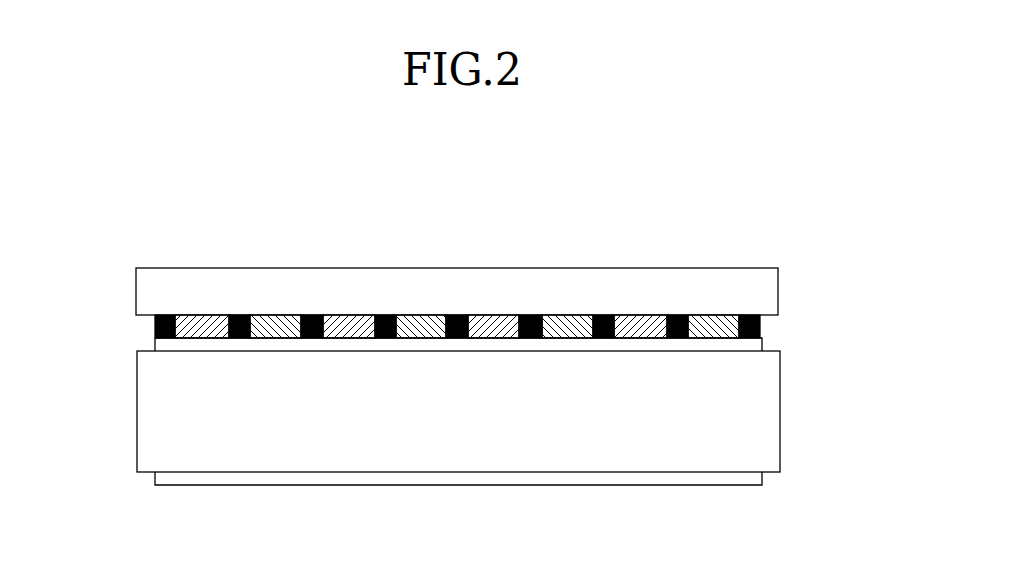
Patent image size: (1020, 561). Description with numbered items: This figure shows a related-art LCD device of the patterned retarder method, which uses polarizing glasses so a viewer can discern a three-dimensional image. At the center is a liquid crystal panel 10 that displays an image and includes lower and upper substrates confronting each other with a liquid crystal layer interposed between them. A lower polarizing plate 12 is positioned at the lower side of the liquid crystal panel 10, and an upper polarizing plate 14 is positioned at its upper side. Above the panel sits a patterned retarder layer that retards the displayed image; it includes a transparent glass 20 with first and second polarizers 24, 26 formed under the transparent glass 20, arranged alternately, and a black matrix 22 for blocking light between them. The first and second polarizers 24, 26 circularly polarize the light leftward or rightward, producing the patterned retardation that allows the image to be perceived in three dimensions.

The liquid crystal panel 10 is at (770, 406).
The lower polarizing plate 12 is at (755, 474).
The upper polarizing plate 14 is at (755, 341).
The transparent glass 20 is at (628, 286).
The black matrix 22 is at (531, 322).
The first polarizer 24 is at (493, 325).
The second polarizer 26 is at (582, 322).